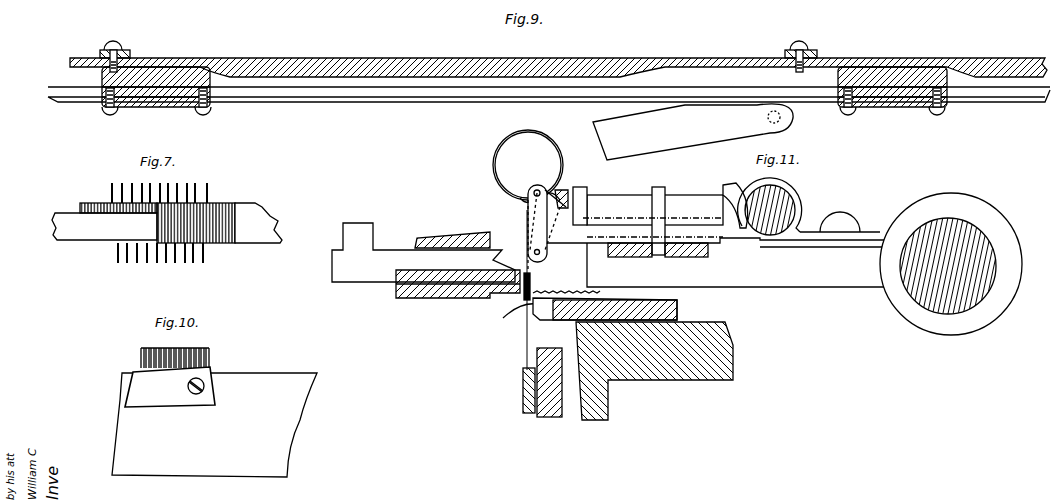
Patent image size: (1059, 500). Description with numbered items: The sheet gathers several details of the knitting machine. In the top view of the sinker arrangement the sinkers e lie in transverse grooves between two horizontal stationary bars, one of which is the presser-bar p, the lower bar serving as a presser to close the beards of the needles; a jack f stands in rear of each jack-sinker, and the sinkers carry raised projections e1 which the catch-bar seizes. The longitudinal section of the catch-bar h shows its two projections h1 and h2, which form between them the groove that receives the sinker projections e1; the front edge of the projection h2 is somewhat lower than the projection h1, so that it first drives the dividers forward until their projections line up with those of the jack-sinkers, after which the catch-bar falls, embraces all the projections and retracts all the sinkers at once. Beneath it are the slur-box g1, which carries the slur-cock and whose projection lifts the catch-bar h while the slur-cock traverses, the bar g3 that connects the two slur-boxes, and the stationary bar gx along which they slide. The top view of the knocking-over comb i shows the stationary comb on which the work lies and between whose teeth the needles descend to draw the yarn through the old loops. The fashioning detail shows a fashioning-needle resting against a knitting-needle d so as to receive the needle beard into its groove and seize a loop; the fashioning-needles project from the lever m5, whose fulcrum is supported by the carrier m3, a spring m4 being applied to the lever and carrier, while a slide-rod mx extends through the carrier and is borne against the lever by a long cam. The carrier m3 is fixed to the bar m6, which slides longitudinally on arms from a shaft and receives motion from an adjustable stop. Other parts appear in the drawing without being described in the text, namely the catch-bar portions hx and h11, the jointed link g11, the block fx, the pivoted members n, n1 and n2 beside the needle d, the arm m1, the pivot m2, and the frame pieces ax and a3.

In FIG. 9, the catch-bar h is at (558, 60).
In FIG. 9, the guide bar section hx is at (442, 66).
In FIG. 9, the projection of the catch-bar h2 is at (1017, 66).
In FIG. 9, the projection of the catch-bar h1 is at (116, 53).
In FIG. 9, the clamping screw h11 is at (802, 54).
In FIG. 9, the stationary bar gx is at (500, 108).
In FIG. 9, the slur-box g1 is at (156, 91).
In FIG. 9, the connecting bar of the slur-boxes g3 is at (892, 90).
In FIG. 9, the hinged plate g11 is at (693, 132).
In FIG. 7, the sinker projection e1 is at (104, 221).
In FIG. 11, the sinker projection e1 is at (360, 232).
In FIG. 7, the presser-bar p is at (219, 223).
In FIG. 7, the jack f is at (159, 223).
In FIG. 11, the jack f is at (452, 240).
In FIG. 10, the knocking-over comb i is at (170, 377).
In FIG. 11, the knocking-over comb i is at (605, 309).
In FIG. 11, the sinkers e is at (423, 252).
In FIG. 11, the clamp block fx is at (458, 284).
In FIG. 11, the spring m4 is at (529, 166).
In FIG. 11, the lever n is at (547, 229).
In FIG. 11, the lever pad n1 is at (561, 199).
In FIG. 11, the lever stop n2 is at (578, 196).
In FIG. 11, the needle d is at (551, 290).
In FIG. 11, the slide-rod mx is at (648, 221).
In FIG. 11, the arm m1 is at (715, 249).
In FIG. 11, the carrier m3 is at (653, 237).
In FIG. 11, the lever m5 is at (735, 205).
In FIG. 11, the pivot pin m2 is at (770, 206).
In FIG. 11, the bar m6 is at (951, 264).
In FIG. 11, the frame block ax is at (654, 371).
In FIG. 11, the guide blocks a3 is at (542, 382).